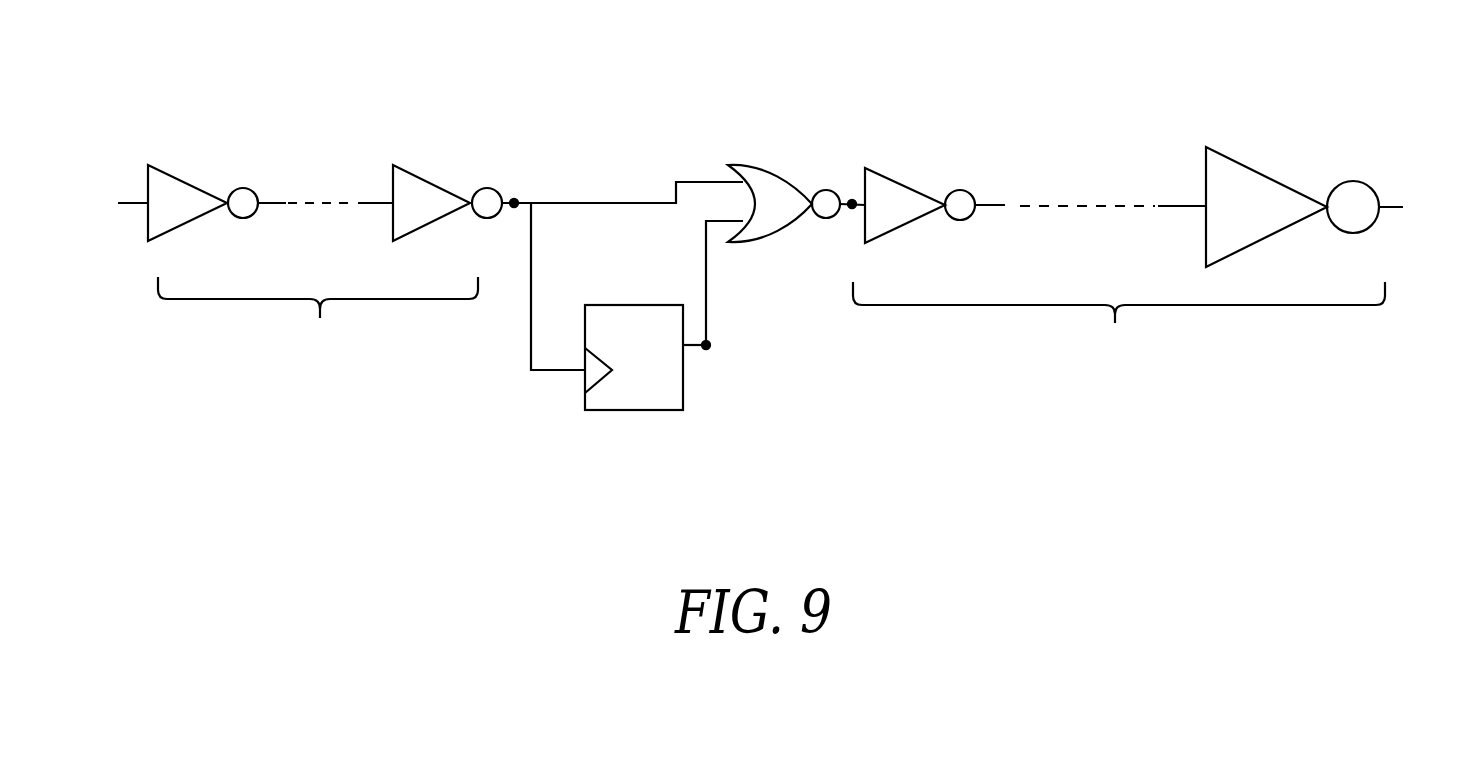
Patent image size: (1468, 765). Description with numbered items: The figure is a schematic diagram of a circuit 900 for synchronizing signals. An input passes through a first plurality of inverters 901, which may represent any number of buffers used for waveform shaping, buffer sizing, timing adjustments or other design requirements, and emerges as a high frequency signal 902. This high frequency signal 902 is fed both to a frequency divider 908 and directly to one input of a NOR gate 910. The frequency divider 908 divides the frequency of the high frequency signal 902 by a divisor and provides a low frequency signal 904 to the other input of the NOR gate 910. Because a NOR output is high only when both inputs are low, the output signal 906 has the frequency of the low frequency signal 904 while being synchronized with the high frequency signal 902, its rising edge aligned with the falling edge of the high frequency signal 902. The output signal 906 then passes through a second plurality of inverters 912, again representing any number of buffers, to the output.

The circuit 900 is at (832, 32).
The first plurality of inverters 901 is at (315, 142).
The high frequency signal 902 is at (514, 200).
The low frequency signal 904 is at (706, 349).
The output signal 906 is at (852, 200).
The frequency divider 908 is at (652, 343).
The NOR gate 910 is at (747, 165).
The second plurality of inverters 912 is at (1085, 158).